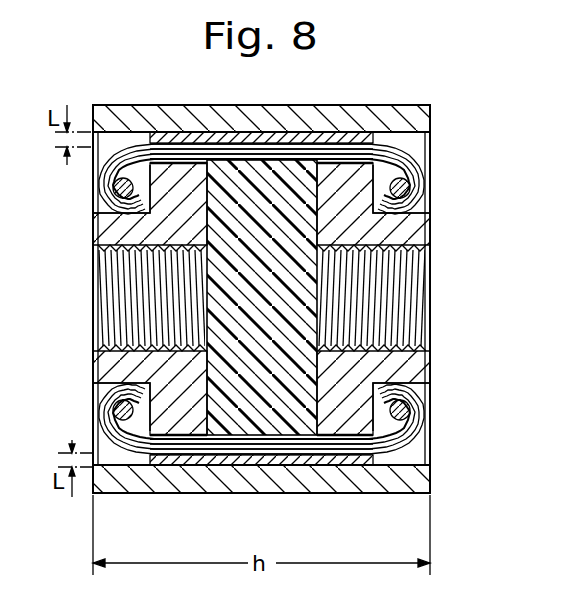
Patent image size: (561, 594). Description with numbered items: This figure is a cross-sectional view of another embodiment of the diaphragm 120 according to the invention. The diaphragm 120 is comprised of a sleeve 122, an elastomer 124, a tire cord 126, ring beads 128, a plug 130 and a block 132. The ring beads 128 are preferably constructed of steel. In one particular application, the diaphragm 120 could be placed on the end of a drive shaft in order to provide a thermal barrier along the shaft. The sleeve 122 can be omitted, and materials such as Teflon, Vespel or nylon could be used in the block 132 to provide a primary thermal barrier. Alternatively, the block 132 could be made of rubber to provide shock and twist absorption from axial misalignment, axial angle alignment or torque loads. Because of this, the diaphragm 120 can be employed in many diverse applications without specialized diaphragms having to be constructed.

The diaphragm 120 is at (436, 318).
The sleeve 122 is at (432, 118).
The elastomer 124 is at (432, 150).
The tire cord 126 is at (420, 186).
The ring beads 128 is at (123, 188).
The plug 130 is at (108, 234).
The block 132 is at (300, 422).